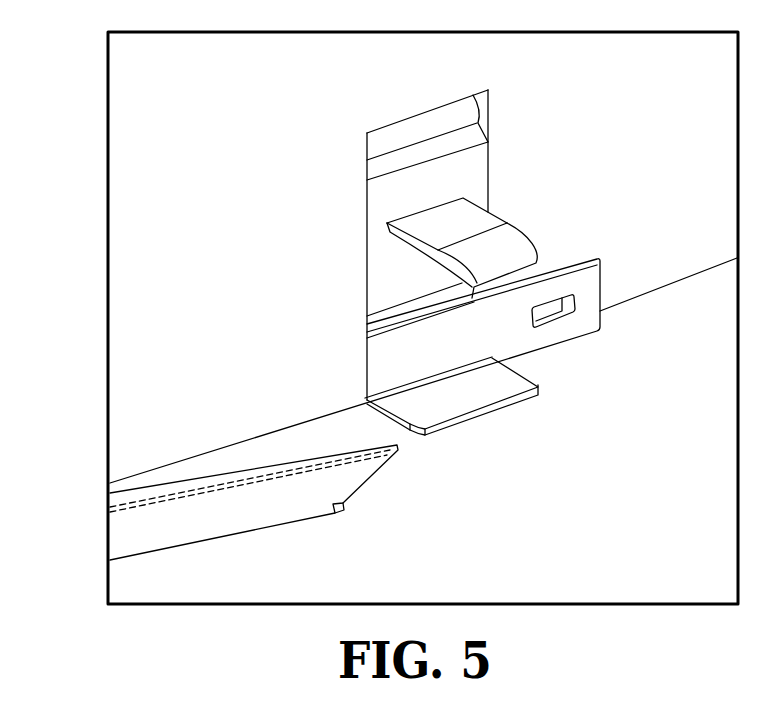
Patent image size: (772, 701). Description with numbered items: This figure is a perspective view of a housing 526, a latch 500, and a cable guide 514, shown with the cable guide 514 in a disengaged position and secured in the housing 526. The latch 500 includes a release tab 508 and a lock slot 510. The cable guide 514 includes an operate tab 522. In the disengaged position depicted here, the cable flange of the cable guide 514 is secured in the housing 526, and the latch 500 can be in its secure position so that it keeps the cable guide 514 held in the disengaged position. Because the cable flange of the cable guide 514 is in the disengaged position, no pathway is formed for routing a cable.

The latch 500 is at (423, 325).
The release tab 508 is at (465, 395).
The lock slot 510 is at (550, 308).
The cable guide 514 is at (383, 200).
The operate tab 522 is at (470, 218).
The housing 526 is at (137, 162).